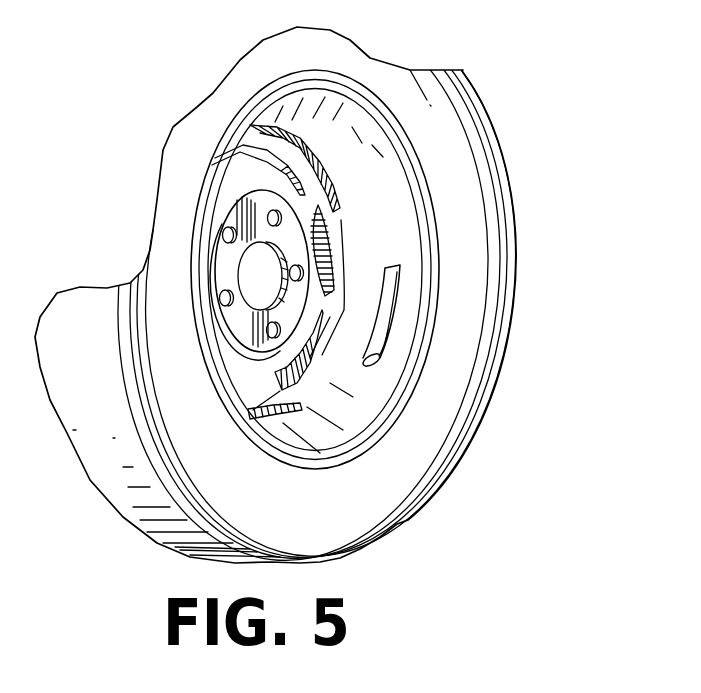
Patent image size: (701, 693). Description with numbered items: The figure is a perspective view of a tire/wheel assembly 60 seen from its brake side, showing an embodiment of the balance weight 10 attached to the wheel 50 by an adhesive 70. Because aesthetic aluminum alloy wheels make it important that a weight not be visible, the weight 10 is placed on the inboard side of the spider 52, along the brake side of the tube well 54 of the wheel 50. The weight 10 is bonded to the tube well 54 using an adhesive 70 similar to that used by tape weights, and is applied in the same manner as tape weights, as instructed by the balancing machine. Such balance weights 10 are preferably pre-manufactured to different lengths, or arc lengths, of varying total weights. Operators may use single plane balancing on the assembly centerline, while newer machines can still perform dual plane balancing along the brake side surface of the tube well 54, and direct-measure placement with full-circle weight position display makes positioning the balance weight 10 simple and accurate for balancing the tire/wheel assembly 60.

The balance weight 10 is at (412, 308).
The wheel 50 is at (405, 425).
The spider 52 is at (310, 196).
The tube well 54 is at (410, 252).
The tire/wheel assembly 60 is at (526, 253).
The adhesive 70 is at (387, 340).